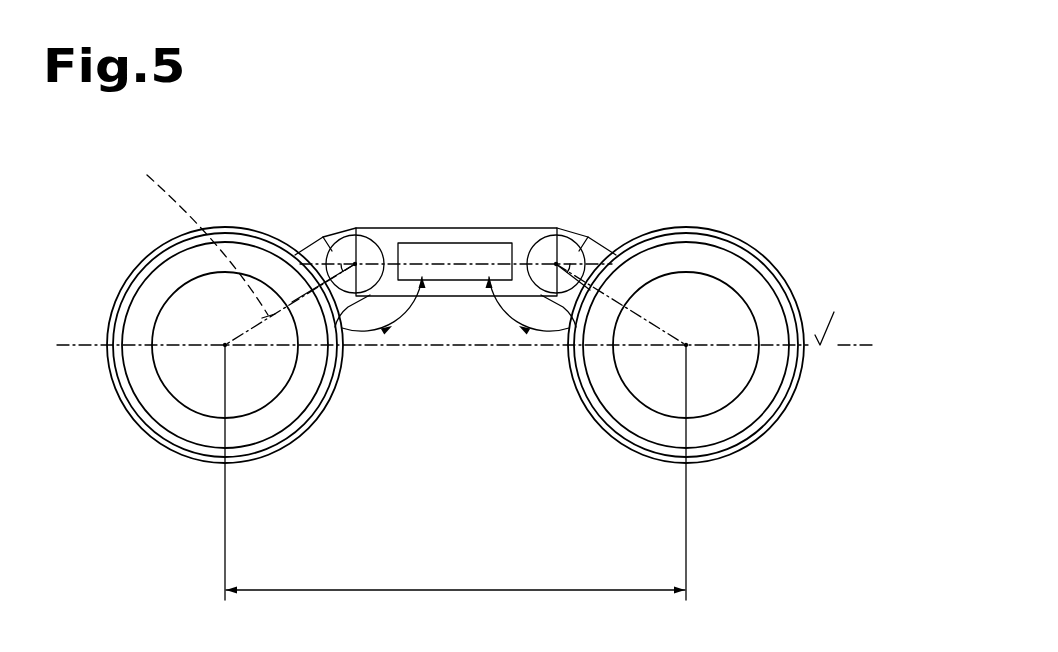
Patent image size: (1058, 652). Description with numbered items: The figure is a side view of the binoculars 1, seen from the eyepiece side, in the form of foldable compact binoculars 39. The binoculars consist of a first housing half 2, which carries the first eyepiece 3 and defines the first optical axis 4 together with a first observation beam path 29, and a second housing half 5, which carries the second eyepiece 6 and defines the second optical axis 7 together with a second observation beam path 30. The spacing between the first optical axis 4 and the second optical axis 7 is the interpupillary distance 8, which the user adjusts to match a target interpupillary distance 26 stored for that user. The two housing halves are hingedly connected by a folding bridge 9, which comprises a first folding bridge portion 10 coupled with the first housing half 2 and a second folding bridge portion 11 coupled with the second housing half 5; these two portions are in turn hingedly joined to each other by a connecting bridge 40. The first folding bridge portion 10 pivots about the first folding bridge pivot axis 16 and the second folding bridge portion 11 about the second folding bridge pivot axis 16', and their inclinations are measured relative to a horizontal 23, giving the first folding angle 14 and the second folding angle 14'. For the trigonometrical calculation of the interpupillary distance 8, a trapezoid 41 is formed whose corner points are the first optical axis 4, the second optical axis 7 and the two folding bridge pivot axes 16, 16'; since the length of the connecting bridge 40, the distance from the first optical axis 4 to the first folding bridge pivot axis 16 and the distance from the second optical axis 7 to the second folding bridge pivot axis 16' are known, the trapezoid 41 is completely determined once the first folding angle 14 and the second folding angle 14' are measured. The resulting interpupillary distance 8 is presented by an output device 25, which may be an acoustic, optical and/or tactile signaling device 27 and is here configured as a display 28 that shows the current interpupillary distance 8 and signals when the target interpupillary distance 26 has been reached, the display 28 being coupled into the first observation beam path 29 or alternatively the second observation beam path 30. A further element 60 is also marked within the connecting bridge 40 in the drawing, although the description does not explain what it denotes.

The binoculars 1 is at (546, 242).
The compact binoculars 39 is at (546, 242).
The first housing half 2 is at (720, 324).
The first eyepiece 3 is at (777, 412).
The first optical axis 4 is at (737, 472).
The first observation beam path 29 is at (686, 345).
The second housing half 5 is at (199, 325).
The second eyepiece 6 is at (131, 412).
The second optical axis 7 is at (173, 472).
The second observation beam path 30 is at (225, 345).
The interpupillary distance 8 is at (455, 560).
The target interpupillary distance 26 is at (461, 581).
The folding bridge 9 is at (456, 172).
The first folding bridge portion 10 is at (592, 240).
The second folding bridge portion 11 is at (297, 252).
The first folding angle 14 is at (384, 377).
The second folding angle 14' is at (528, 376).
The first folding bridge pivot axis 16 is at (304, 217).
The second folding bridge pivot axis 16' is at (606, 237).
The horizontal 23 is at (834, 312).
The output device 25 is at (471, 188).
The signaling device 27 is at (471, 188).
The display 28 is at (471, 188).
The connecting bridge 40 is at (420, 228).
The trapezoid 41 is at (202, 229).
The control unit 60 is at (476, 233).